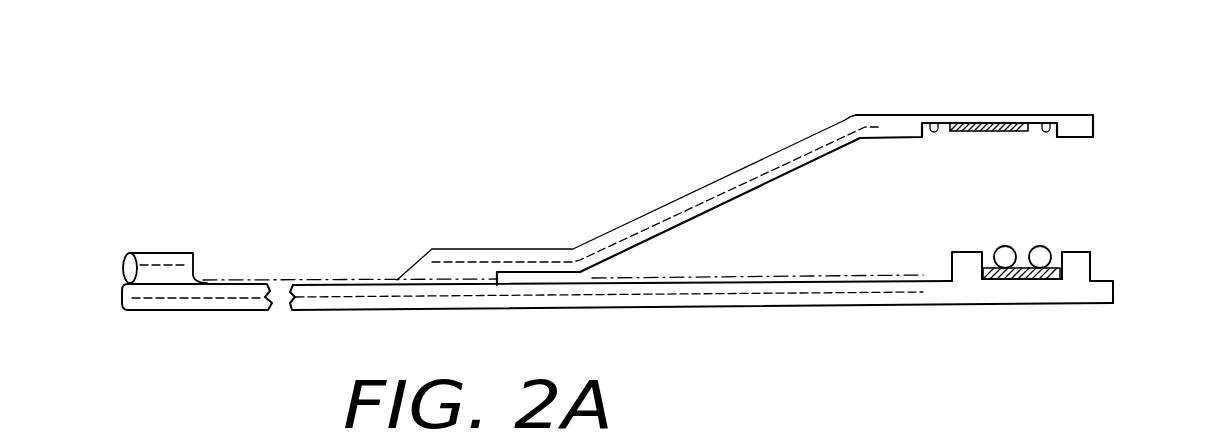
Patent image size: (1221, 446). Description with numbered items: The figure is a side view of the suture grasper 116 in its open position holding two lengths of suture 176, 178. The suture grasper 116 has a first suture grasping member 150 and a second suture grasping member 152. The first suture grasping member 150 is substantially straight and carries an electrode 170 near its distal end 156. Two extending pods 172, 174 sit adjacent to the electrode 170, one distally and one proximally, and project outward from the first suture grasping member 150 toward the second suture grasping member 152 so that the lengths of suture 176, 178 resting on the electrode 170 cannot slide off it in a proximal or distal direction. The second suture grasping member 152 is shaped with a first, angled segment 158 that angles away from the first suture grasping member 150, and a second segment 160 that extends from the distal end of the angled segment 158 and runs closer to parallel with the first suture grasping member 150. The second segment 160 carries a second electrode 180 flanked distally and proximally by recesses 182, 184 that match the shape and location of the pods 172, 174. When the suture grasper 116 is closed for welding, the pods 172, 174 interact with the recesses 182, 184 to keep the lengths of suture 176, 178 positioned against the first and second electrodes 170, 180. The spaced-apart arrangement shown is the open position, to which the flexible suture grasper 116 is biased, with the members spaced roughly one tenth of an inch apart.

The suture grasper 116 is at (712, 108).
The first suture grasping member 150 is at (843, 304).
The second suture grasping member 152 is at (847, 118).
The distal end 156 is at (1117, 293).
The first, angled segment 158 is at (687, 195).
The second segment 160 is at (908, 115).
The electrode 170 is at (1023, 282).
The pod 172 is at (1080, 253).
The pod 174 is at (968, 253).
The length of suture 176 is at (1043, 279).
The length of suture 178 is at (1002, 279).
The second electrode 180 is at (992, 120).
The recess 182 is at (1048, 120).
The recess 184 is at (932, 122).